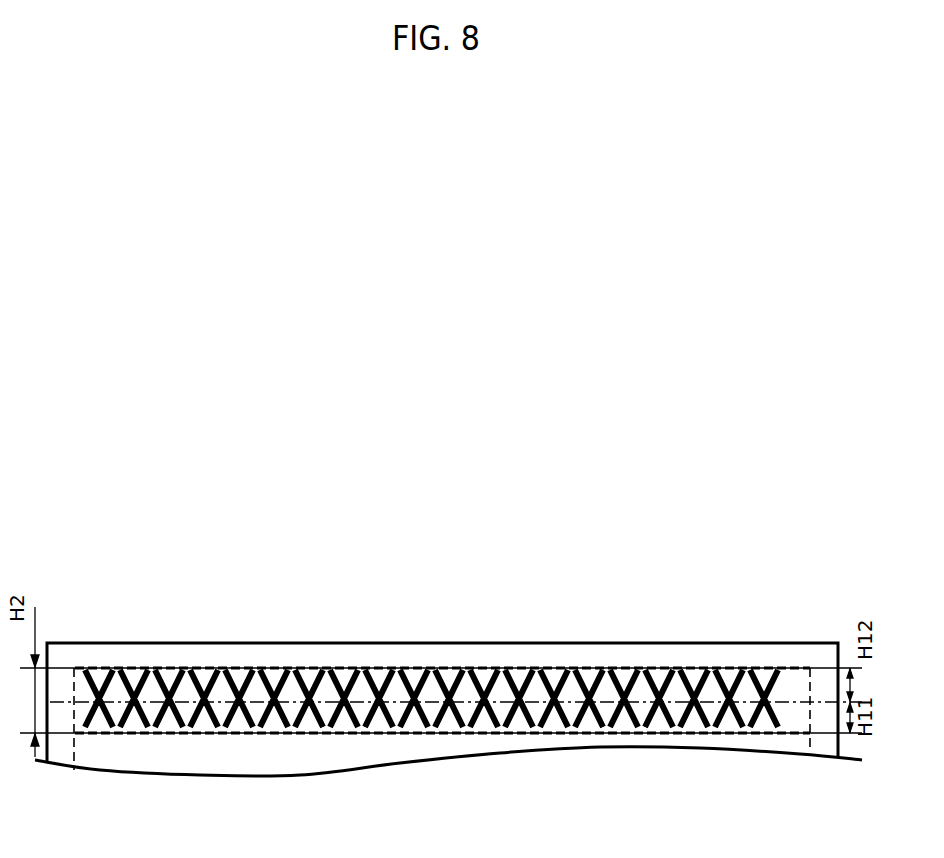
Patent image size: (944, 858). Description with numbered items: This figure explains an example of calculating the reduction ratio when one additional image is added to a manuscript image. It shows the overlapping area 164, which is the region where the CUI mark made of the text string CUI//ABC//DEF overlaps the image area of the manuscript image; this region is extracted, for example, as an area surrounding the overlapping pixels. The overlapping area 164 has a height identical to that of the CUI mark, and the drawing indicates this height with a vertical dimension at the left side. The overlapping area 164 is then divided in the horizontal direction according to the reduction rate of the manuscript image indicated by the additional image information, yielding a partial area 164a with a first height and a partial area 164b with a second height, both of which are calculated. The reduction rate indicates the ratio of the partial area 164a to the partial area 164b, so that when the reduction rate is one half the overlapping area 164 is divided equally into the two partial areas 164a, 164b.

The overlapping area 164 is at (148, 734).
The partial area 164a is at (712, 718).
The partial area 164b is at (713, 680).